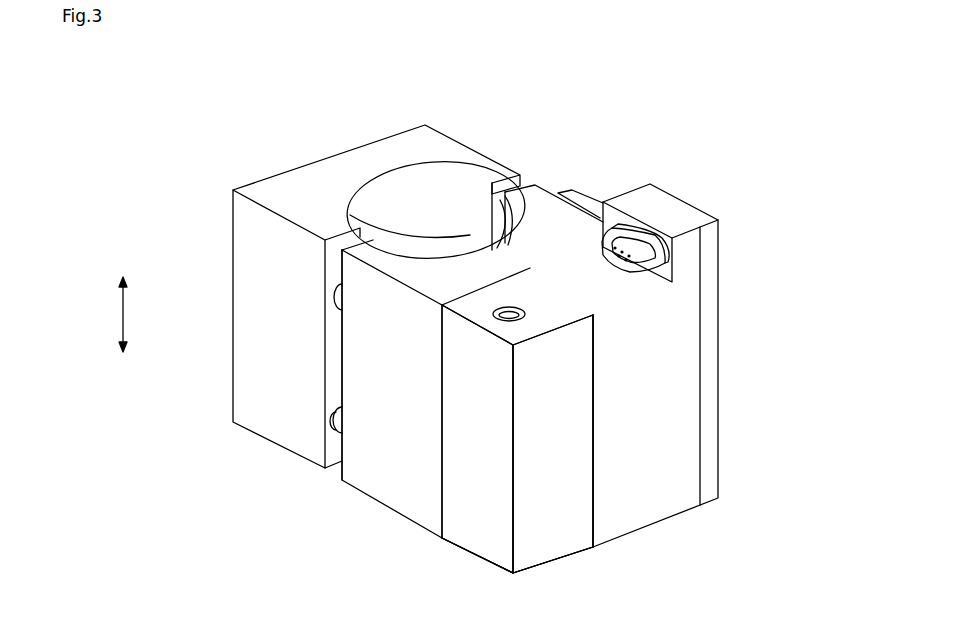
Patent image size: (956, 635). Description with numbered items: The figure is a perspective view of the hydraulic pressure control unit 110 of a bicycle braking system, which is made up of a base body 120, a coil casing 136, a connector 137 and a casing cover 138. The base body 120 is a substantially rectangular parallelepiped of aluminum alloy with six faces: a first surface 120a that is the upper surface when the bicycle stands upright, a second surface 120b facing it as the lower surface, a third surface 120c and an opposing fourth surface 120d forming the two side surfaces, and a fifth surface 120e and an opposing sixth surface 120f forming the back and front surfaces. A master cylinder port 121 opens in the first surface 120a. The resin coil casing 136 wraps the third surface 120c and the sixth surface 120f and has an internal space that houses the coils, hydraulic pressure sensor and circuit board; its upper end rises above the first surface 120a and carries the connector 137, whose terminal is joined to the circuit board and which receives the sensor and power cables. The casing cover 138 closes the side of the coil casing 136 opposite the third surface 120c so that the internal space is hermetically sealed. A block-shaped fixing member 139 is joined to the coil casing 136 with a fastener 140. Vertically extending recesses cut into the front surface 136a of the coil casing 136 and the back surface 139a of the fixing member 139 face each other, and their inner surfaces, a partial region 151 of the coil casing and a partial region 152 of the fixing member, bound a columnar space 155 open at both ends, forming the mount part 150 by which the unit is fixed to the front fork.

The hydraulic pressure control unit 110 is at (458, 307).
The base body 120 is at (531, 368).
The first surface 120a is at (548, 316).
The second surface 120b is at (556, 560).
The third surface 120c is at (595, 518).
The fourth surface 120d is at (472, 538).
The fifth surface 120e is at (522, 547).
The sixth surface 120f is at (444, 515).
The master cylinder port 121 is at (513, 308).
The coil casing 136 is at (660, 500).
The front surface of the coil casing 136a is at (338, 348).
The connector 137 is at (642, 250).
The casing cover 138 is at (707, 467).
The fixing member 139 is at (245, 263).
The back surface of the fixing member 139a is at (330, 380).
The fastener 140 is at (333, 424).
The mount part 150 is at (368, 162).
The partial region of the outer surface of the coil casing 151 is at (500, 240).
The partial region of the outer surface of the fixing member 152 is at (368, 190).
The columnar space 155 is at (390, 220).